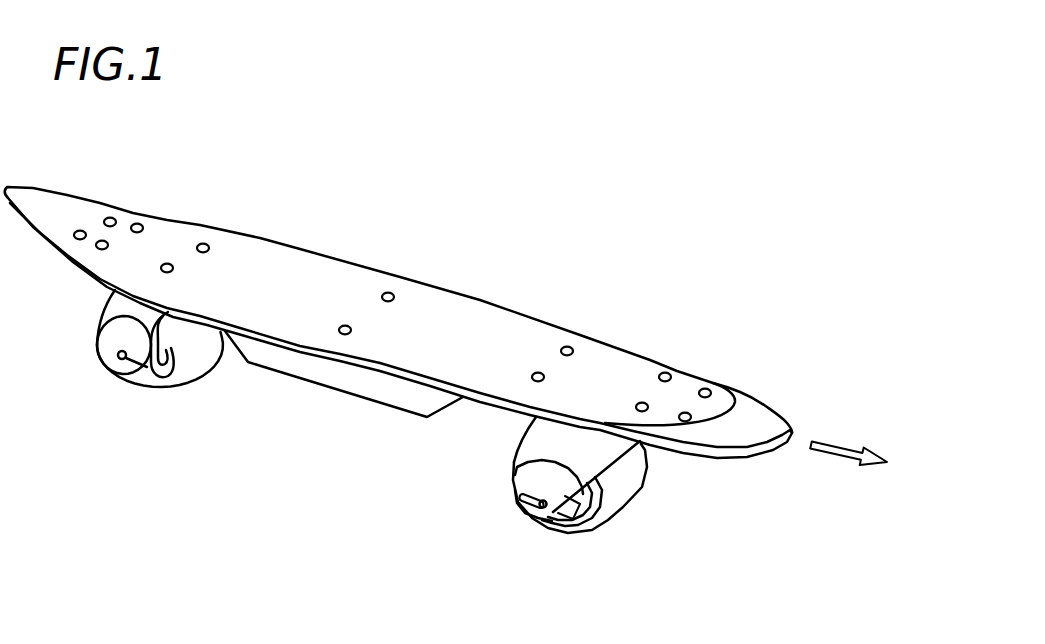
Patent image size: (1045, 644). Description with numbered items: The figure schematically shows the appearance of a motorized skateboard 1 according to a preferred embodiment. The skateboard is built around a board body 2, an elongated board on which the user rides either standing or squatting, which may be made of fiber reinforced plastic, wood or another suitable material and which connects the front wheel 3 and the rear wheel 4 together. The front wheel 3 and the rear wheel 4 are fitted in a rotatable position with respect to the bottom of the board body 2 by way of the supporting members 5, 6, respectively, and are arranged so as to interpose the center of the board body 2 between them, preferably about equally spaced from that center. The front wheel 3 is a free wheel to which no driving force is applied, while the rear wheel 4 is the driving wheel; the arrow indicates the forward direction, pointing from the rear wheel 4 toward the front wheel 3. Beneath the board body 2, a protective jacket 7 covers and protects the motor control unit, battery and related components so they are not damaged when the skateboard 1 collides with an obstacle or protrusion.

The motorized skateboard 1 is at (719, 169).
The board body 2 is at (513, 323).
The front wheel 3 is at (615, 509).
The rear wheel 4 is at (180, 368).
The supporting member 5 is at (522, 478).
The supporting member 6 is at (106, 337).
The protective jacket 7 is at (358, 385).